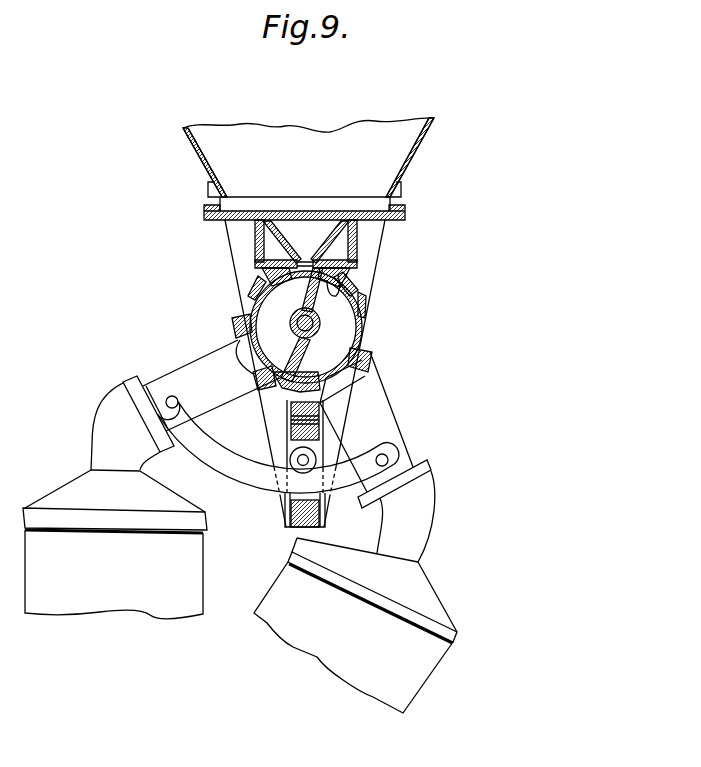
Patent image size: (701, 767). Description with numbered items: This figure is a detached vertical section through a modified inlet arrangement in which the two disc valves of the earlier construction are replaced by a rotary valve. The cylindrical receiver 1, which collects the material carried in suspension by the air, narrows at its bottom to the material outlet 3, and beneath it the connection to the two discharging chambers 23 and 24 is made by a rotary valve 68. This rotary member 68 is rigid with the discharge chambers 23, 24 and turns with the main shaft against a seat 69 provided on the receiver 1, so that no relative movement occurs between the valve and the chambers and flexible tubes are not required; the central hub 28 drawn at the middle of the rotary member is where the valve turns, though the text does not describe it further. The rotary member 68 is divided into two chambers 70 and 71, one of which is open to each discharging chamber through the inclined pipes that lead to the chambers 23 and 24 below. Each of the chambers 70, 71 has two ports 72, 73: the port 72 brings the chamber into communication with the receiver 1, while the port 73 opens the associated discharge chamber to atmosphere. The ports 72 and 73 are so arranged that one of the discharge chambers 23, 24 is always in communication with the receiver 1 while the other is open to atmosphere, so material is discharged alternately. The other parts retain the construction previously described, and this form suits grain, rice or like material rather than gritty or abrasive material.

The receiver 1 is at (207, 150).
The material outlet 3 is at (396, 209).
The discharging chamber 23 is at (108, 612).
The discharging chamber 24 is at (310, 652).
The valve shaft 28 is at (318, 321).
The rotary valve 68 is at (362, 332).
The seat 69 is at (322, 293).
The chamber of the rotary member 70 is at (270, 318).
The chamber of the rotary member 71 is at (336, 354).
The port 72 is at (350, 268).
The port 73 is at (362, 305).